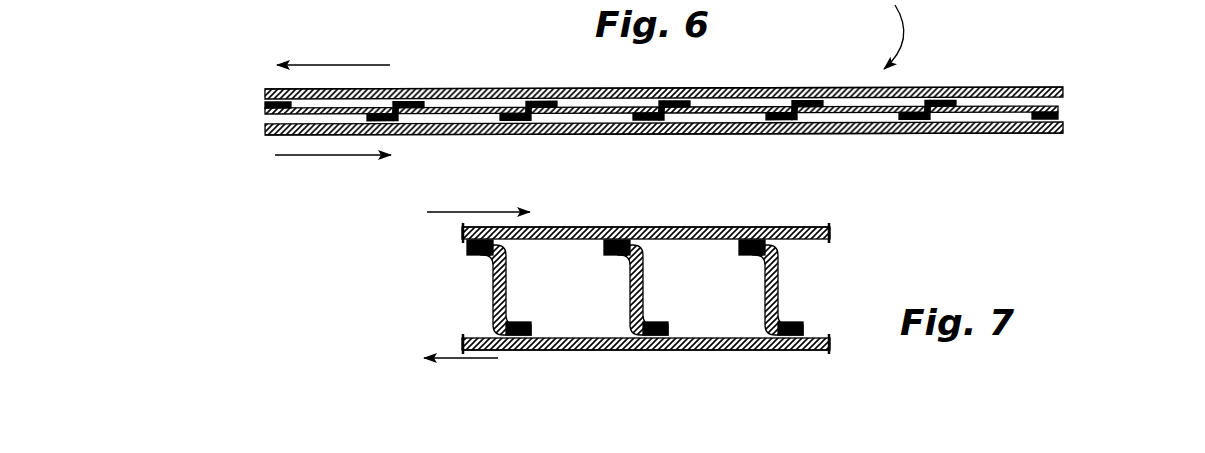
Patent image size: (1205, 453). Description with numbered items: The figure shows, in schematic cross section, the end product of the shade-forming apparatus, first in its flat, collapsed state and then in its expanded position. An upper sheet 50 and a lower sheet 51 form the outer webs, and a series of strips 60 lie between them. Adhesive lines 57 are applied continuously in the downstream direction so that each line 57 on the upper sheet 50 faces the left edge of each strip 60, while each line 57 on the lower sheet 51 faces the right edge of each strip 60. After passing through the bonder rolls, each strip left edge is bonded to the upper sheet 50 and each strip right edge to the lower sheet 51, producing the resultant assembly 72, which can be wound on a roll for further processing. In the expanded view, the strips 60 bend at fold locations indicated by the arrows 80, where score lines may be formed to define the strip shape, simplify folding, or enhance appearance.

In FIG. 6, the upper sheet 50 is at (737, 88).
In FIG. 7, the upper sheet 50 is at (682, 227).
In FIG. 6, the lower sheet 51 is at (798, 134).
In FIG. 7, the lower sheet 51 is at (688, 338).
In FIG. 6, the adhesive lines 57 is at (533, 88).
In FIG. 7, the adhesive lines 57 is at (467, 246).
In FIG. 6, the strips 60 is at (603, 104).
In FIG. 7, the strips 60 is at (505, 286).
In FIG. 6, the resultant assembly 72 is at (883, 34).
In FIG. 7, the arrows 80 is at (486, 264).